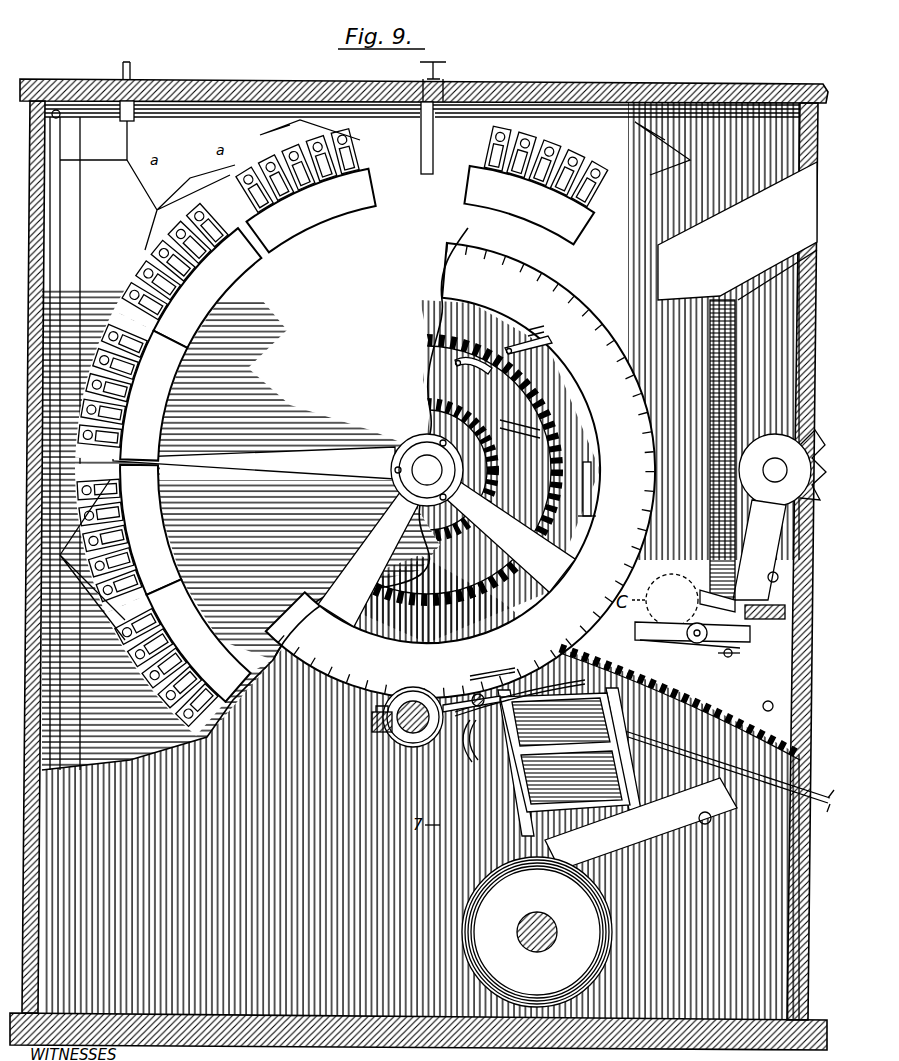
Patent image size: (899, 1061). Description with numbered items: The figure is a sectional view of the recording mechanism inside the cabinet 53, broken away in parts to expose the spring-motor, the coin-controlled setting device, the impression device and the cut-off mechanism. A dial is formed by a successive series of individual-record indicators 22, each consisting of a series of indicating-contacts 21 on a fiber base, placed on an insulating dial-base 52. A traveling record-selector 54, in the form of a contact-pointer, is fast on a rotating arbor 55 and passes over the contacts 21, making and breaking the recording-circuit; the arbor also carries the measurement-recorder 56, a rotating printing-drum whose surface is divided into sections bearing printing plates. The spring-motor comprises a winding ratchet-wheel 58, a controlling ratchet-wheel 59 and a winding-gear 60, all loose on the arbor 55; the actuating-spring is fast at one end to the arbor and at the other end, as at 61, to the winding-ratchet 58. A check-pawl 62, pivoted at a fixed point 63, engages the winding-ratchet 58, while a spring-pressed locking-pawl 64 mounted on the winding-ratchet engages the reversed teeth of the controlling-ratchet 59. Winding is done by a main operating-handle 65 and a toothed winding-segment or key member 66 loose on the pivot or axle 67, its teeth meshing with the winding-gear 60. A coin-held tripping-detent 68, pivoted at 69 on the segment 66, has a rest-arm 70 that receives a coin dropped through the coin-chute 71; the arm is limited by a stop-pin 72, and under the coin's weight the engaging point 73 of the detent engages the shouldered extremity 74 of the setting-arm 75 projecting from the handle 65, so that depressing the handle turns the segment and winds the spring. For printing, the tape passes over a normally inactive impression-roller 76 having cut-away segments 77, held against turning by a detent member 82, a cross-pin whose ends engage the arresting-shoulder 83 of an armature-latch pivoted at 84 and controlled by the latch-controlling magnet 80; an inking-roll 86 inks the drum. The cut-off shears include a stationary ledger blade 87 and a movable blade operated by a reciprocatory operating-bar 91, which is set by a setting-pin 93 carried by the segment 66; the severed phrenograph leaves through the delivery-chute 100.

The indicating-contacts 21 is at (482, 160).
The individual-record indicators 22 is at (476, 208).
The dial-base 52 is at (406, 463).
The cabinet 53 is at (330, 84).
The traveling record-selector 54 is at (254, 463).
The rotating arbor 55 is at (412, 445).
The measurement-recorder 56 is at (576, 300).
The winding ratchet-wheel 58 is at (433, 470).
The controlling ratchet-wheel 59 is at (537, 427).
The winding-gear 60 is at (497, 462).
The spring fastening 61 is at (525, 814).
The check-pawl 62 is at (528, 355).
The check-pawl pivot 63 is at (528, 330).
The spring-pressed locking-pawl 64 is at (473, 370).
The main operating-handle 65 is at (623, 331).
The key member 66 is at (592, 678).
The pivot or axle 67 is at (768, 462).
The coin-held tripping-detent 68 is at (727, 660).
The detent pivot 69 is at (695, 645).
The rest-arm 70 is at (690, 651).
The coin-chute 71 is at (737, 231).
The stop-pin 72 is at (640, 640).
The engaging point 73 is at (735, 650).
The shouldered extremity 74 is at (717, 591).
The setting-arm 75 is at (748, 540).
The impression-roller 76 is at (482, 712).
The cut-away segments 77 is at (481, 757).
The latch-controlling magnet 80 is at (640, 773).
The detent member 82 is at (420, 748).
The arresting-shoulder 83 is at (520, 712).
The armature-latch pivot 84 is at (545, 845).
The inking-roll 86 is at (405, 742).
The stationary or ledger blade 87 is at (493, 665).
The reciprocatory operating-bar 91 is at (582, 486).
The setting-pin 93 is at (766, 711).
The delivery-chute 100 is at (826, 790).